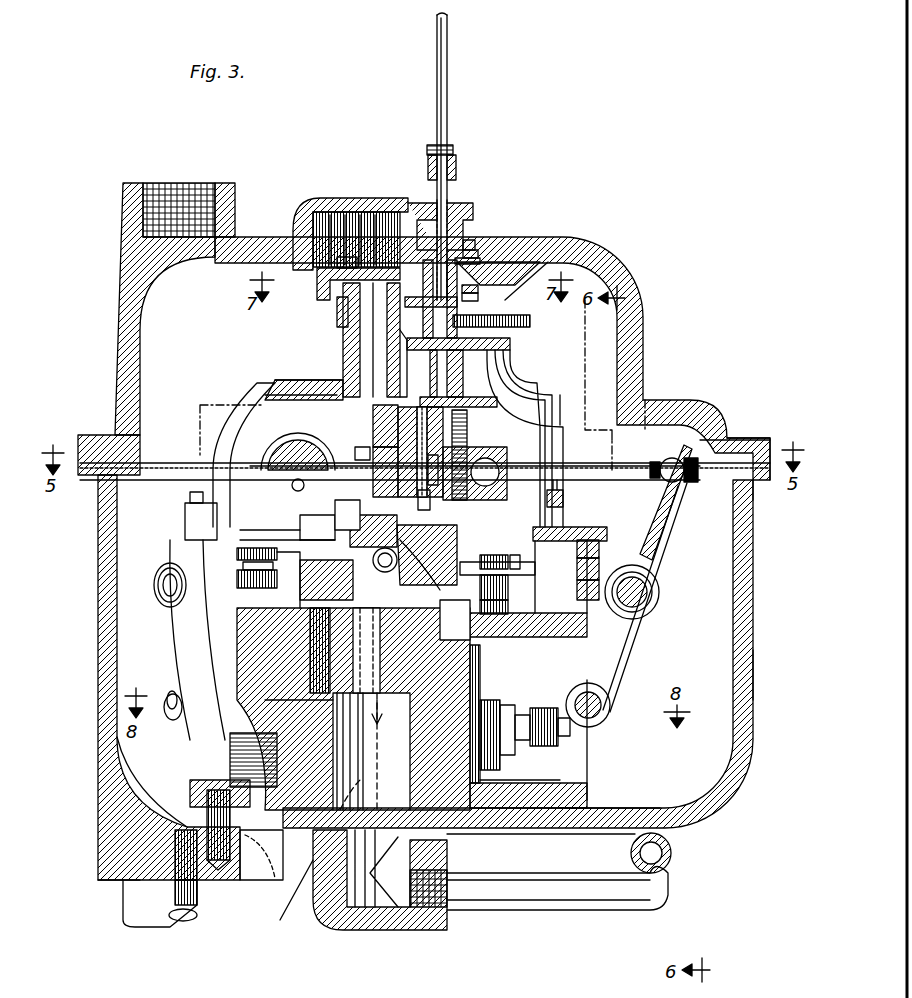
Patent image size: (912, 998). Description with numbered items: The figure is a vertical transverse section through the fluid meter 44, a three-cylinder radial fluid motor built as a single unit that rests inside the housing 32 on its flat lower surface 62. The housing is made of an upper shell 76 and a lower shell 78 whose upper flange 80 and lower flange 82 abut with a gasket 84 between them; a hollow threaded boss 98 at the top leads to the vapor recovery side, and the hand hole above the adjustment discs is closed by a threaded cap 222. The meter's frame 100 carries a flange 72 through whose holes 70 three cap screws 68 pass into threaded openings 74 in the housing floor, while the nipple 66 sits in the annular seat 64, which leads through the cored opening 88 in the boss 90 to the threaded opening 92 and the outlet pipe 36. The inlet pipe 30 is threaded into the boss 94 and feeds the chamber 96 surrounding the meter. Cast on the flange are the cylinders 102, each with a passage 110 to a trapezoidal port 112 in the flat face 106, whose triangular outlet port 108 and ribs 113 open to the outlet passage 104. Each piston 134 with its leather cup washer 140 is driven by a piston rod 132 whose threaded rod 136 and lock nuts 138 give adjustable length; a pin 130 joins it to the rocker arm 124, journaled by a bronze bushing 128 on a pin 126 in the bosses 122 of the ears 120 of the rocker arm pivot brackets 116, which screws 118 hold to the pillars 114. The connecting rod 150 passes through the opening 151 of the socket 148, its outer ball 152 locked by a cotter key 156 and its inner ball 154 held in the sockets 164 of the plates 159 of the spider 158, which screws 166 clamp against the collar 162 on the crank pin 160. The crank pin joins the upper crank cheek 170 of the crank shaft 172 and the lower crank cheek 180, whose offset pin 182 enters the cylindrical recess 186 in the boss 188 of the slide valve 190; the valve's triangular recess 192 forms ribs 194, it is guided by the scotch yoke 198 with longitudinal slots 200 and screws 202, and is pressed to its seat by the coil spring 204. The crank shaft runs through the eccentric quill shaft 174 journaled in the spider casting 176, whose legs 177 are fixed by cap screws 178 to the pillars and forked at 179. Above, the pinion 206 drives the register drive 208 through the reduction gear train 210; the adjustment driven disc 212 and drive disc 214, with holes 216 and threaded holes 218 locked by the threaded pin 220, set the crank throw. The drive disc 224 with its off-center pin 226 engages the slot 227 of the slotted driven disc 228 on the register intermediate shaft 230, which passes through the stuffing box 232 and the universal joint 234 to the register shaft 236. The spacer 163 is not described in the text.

The inlet pipe 30 is at (170, 922).
The housing 32 is at (764, 670).
The outlet pipe 36 is at (559, 871).
The fluid meter 44 is at (553, 380).
The lower surface 62 is at (592, 814).
The annular seat 64 is at (277, 853).
The nipple 66 is at (315, 893).
The cap screws 68 is at (190, 857).
The holes 70 is at (195, 790).
The flange 72 is at (245, 772).
The threaded openings 74 is at (228, 845).
The upper shell 76 is at (712, 428).
The lower shell 78 is at (748, 602).
The upper flange 80 is at (745, 438).
The lower flange 82 is at (757, 488).
The gasket 84 is at (88, 445).
The cored opening 88 is at (376, 868).
The boss 90 is at (348, 930).
The threaded opening 92 is at (432, 925).
The boss 94 is at (90, 882).
The chamber 96 is at (112, 664).
The hollow threaded boss 98 is at (228, 197).
The frame 100 is at (187, 638).
The cylinders 102 is at (175, 720).
The outlet passage 104 is at (375, 775).
The face 106 is at (300, 675).
The triangular outlet port 108 is at (445, 565).
The passage 110 is at (522, 622).
The port 112 is at (442, 615).
The ribs 113 is at (415, 580).
The pillars 114 is at (588, 540).
The rocker arm pivot brackets 116 is at (600, 562).
The screws 118 is at (662, 645).
The ears 120 is at (600, 588).
The bosses 122 is at (160, 596).
The rocker arm 124 is at (162, 704).
The pin 126 is at (162, 600).
The bronze bushing 128 is at (660, 592).
The pin 130 is at (168, 704).
The piston rod 132 is at (554, 733).
The piston 134 is at (482, 695).
The rod 136 is at (510, 702).
The lock nuts 138 is at (525, 737).
The leather cup washer 140 is at (520, 770).
The socket 148 is at (688, 472).
The connecting rod 150 is at (330, 448).
The opening 151 is at (266, 494).
The ball 152 is at (657, 478).
The ball 154 is at (486, 458).
The cotter key 156 is at (722, 438).
The spider 158 is at (465, 441).
The plates 159 is at (285, 490).
The crank pin 160 is at (432, 398).
The collar 162 is at (430, 545).
The spacer 163 is at (447, 470).
The sockets 164 is at (492, 554).
The screws 166 is at (462, 500).
The upper crank cheek 170 is at (390, 440).
The crank shaft 172 is at (338, 370).
The quill shaft 174 is at (344, 382).
The spider casting 176 is at (345, 358).
The legs 177 is at (238, 410).
The cap screws 178 is at (262, 396).
The forked ends 179 is at (285, 510).
The lower crank cheek 180 is at (507, 544).
The pin 182 is at (403, 438).
The cylindrical recess 186 is at (262, 702).
The boss 188 is at (315, 525).
The slide valve 190 is at (495, 583).
The triangular recess 192 is at (340, 562).
The ribs 194 is at (277, 556).
The scotch yoke 198 is at (277, 578).
The longitudinal slots 200 is at (538, 560).
The screws 202 is at (170, 548).
The coil spring 204 is at (420, 512).
The pinion 206 is at (342, 320).
The register drive 208 is at (462, 275).
The reduction gear train 210 is at (477, 321).
The adjustment driven disc 212 is at (374, 215).
The drive disc 214 is at (360, 268).
The holes 216 is at (335, 300).
The threaded holes 218 is at (448, 202).
The threaded pin 220 is at (410, 206).
The threaded cap 222 is at (322, 200).
The drive disc 224 is at (478, 298).
The off-center pin 226 is at (478, 289).
The slot 227 is at (540, 264).
The slotted driven disc 228 is at (466, 262).
The register intermediate shaft 230 is at (470, 252).
The stuffing box 232 is at (470, 240).
The universal joint 234 is at (457, 155).
The register shaft 236 is at (446, 84).